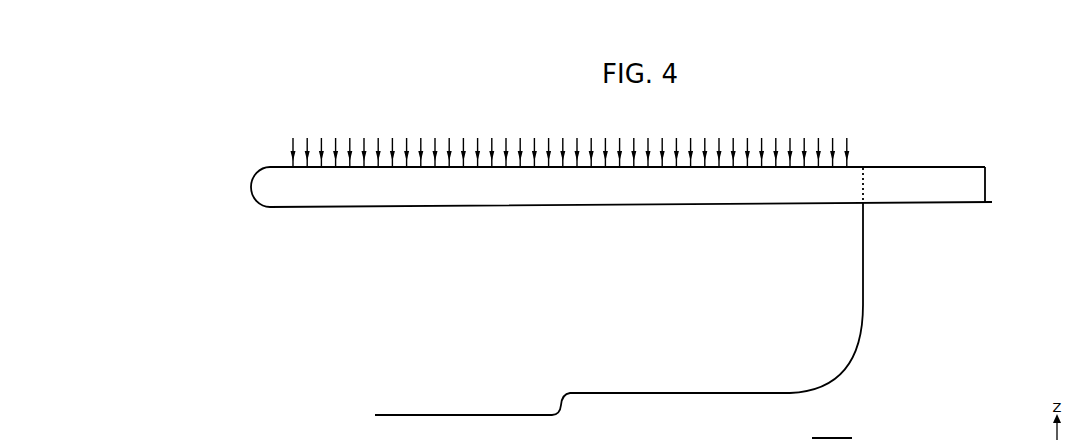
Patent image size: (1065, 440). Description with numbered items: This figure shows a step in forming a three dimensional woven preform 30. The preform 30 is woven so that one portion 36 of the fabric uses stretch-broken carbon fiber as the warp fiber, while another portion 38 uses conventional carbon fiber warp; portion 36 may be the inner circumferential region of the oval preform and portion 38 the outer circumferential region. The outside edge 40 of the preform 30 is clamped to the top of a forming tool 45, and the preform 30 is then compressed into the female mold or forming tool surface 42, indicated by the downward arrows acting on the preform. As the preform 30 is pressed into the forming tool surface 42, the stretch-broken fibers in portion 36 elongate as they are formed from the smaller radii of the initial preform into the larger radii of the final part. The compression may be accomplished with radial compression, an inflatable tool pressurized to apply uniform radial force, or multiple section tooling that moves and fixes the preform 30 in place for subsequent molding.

The woven preform 30 is at (288, 185).
The portion 36 is at (567, 183).
The portion 38 is at (898, 185).
The outside edge 40 is at (923, 167).
The female mold or forming tool surface 42 is at (864, 231).
The forming tool 45 is at (860, 343).